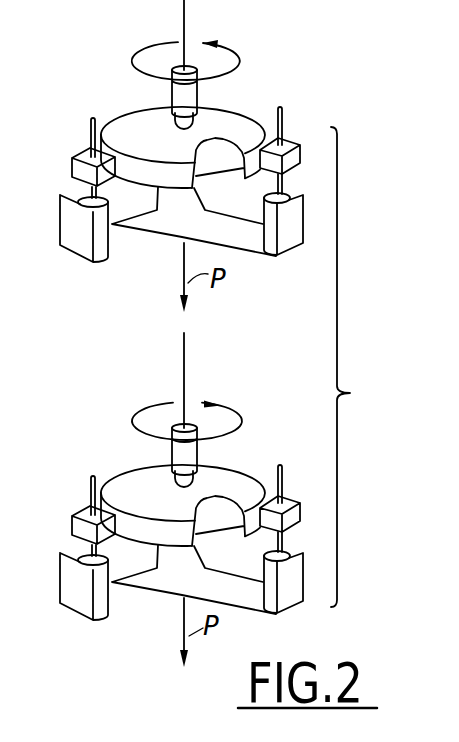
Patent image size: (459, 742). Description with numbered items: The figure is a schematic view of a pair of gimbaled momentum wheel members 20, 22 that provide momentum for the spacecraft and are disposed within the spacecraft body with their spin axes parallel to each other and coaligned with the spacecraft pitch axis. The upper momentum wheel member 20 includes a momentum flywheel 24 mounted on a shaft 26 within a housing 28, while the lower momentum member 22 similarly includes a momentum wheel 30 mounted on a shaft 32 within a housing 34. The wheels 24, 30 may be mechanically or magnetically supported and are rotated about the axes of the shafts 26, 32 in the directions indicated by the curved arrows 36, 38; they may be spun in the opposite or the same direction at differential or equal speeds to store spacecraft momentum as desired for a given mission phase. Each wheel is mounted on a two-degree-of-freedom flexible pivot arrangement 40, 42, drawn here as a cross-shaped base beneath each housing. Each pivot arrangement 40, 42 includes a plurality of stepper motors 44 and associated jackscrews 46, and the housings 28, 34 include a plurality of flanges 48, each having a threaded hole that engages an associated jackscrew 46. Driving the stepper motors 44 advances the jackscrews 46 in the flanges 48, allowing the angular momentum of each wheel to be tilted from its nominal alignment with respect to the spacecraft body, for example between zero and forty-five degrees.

The gimbaled momentum wheel member 20 is at (199, 107).
The gimbaled momentum wheel member 22 is at (184, 452).
The momentum flywheel 24 is at (219, 176).
The shaft 26 is at (198, 97).
The housing 28 is at (221, 137).
The momentum wheel 30 is at (226, 534).
The shaft 32 is at (221, 455).
The housing 34 is at (212, 499).
The curved arrow 36 is at (234, 52).
The curved arrow 38 is at (137, 413).
The two-degree-of-freedom flexible pivot arrangement 40 is at (135, 306).
The two-degree-of-freedom flexible pivot arrangement 42 is at (269, 417).
The stepper motor 44 is at (103, 238).
The jackscrew 46 is at (91, 124).
The flange 48 is at (77, 163).